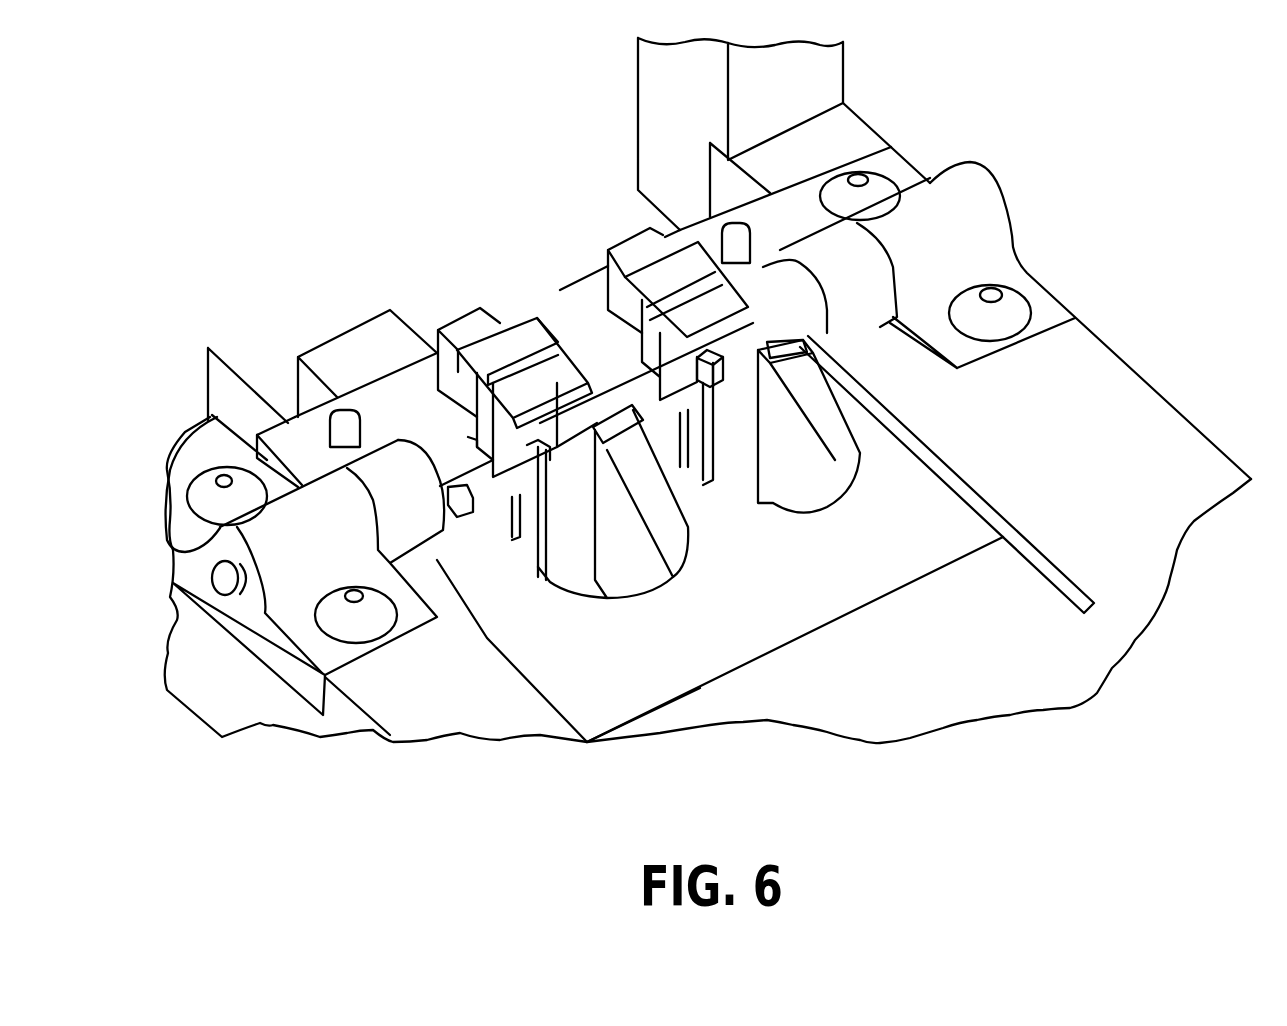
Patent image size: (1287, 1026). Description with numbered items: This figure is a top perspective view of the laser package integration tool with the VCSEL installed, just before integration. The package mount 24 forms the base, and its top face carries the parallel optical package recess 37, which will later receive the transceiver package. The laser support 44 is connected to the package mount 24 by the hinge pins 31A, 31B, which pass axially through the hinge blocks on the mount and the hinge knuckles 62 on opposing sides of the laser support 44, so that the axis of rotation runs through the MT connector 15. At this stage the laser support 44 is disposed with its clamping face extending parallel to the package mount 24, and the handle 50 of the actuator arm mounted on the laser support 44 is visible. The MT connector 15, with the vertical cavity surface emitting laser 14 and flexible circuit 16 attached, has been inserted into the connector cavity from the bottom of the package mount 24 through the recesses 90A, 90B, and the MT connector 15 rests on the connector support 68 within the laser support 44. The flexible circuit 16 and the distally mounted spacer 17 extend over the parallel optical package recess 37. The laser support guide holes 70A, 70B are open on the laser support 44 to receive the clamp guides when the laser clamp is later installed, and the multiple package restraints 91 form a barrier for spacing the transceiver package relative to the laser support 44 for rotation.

The vertical cavity surface emitting laser 14 is at (655, 268).
The MT connector 15 is at (528, 445).
The flexible circuit 16 is at (548, 380).
The spacer 17 is at (472, 422).
The package mount 24 is at (1115, 647).
The hinge pin 31A is at (823, 347).
The hinge pin 31B is at (220, 580).
The parallel optical package recess 37 is at (921, 556).
The laser support 44 is at (572, 305).
The handle 50 is at (340, 352).
The hinge knuckle 62 is at (410, 518).
The connector support 68 is at (622, 252).
The laser support guide hole 70A is at (737, 237).
The laser support guide hole 70B is at (333, 430).
The recess 90A is at (628, 578).
The recess 90B is at (808, 495).
The package restraint 91 is at (463, 510).